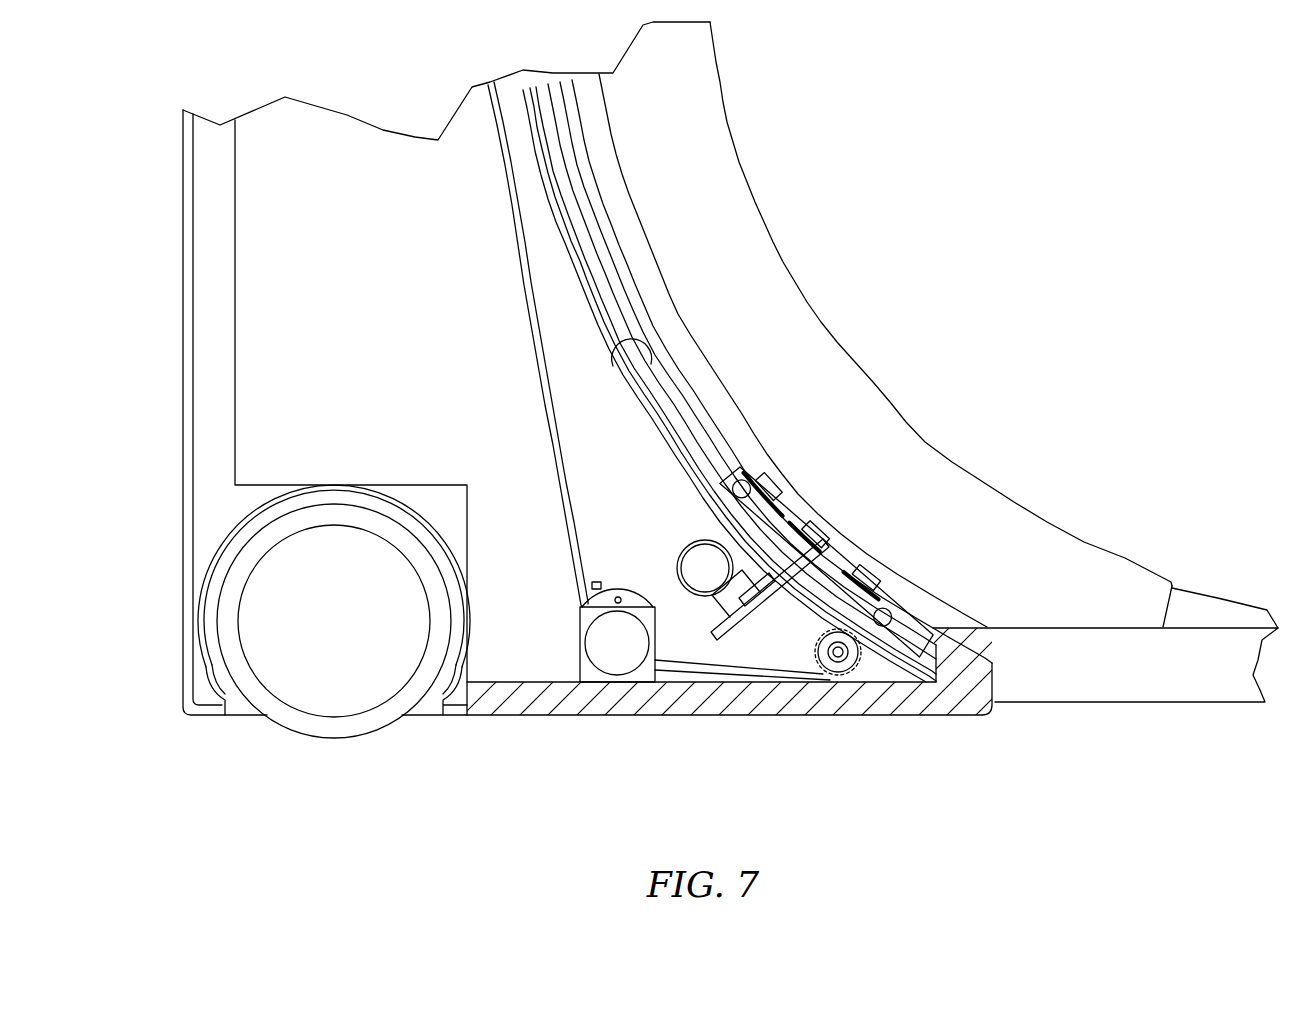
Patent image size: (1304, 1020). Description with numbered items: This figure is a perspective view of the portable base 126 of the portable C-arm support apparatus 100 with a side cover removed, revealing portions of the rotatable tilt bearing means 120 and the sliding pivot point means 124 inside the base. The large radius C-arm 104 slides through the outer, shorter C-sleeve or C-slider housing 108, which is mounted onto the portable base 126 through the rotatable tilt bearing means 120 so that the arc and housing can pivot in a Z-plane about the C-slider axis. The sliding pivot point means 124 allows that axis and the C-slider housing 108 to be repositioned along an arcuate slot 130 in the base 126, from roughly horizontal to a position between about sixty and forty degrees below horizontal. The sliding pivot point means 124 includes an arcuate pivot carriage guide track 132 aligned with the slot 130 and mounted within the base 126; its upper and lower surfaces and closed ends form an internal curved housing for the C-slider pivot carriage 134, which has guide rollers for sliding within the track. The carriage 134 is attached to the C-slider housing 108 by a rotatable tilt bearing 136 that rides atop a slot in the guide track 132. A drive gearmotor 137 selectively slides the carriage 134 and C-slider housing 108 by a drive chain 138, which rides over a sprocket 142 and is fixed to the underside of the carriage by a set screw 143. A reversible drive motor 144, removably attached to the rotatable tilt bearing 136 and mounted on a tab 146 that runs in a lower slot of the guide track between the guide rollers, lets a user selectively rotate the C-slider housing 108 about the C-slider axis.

The portable C-arm support apparatus 100 is at (914, 169).
The C-arm 104 is at (1213, 610).
The C-sleeve 108 is at (707, 153).
The rotatable tilt bearing means 120 is at (776, 453).
The sliding pivot point means 124 is at (548, 653).
The portable base 126 is at (218, 242).
The arcuate slot 130 is at (660, 306).
The arcuate pivot carriage guide track 132 is at (608, 367).
The C-slider pivot carriage 134 is at (862, 597).
The rotatable tilt bearing 136 is at (803, 513).
The drive gearmotor 137 is at (617, 655).
The drive chain 138 is at (518, 289).
The sprocket 142 is at (868, 674).
The set screw 143 is at (823, 535).
The reversible drive motor 144 is at (702, 565).
The tab 146 is at (750, 620).